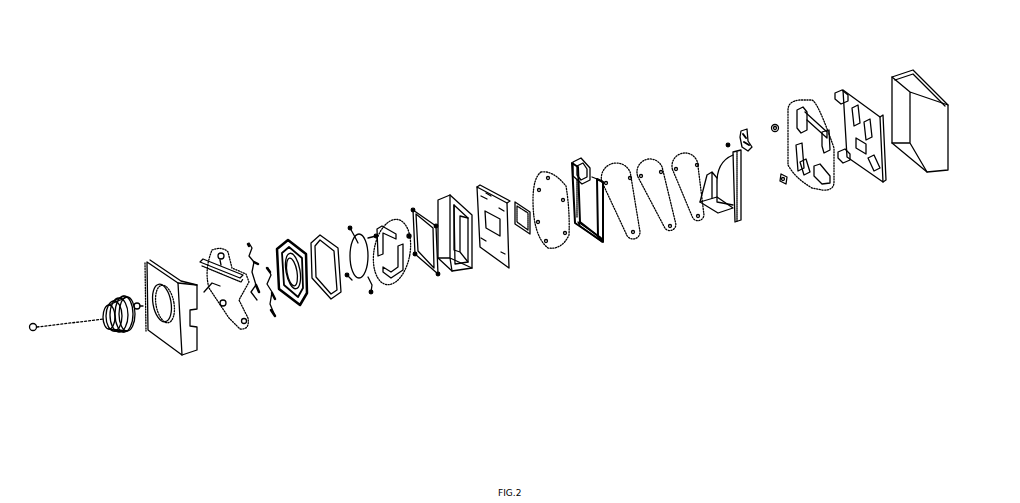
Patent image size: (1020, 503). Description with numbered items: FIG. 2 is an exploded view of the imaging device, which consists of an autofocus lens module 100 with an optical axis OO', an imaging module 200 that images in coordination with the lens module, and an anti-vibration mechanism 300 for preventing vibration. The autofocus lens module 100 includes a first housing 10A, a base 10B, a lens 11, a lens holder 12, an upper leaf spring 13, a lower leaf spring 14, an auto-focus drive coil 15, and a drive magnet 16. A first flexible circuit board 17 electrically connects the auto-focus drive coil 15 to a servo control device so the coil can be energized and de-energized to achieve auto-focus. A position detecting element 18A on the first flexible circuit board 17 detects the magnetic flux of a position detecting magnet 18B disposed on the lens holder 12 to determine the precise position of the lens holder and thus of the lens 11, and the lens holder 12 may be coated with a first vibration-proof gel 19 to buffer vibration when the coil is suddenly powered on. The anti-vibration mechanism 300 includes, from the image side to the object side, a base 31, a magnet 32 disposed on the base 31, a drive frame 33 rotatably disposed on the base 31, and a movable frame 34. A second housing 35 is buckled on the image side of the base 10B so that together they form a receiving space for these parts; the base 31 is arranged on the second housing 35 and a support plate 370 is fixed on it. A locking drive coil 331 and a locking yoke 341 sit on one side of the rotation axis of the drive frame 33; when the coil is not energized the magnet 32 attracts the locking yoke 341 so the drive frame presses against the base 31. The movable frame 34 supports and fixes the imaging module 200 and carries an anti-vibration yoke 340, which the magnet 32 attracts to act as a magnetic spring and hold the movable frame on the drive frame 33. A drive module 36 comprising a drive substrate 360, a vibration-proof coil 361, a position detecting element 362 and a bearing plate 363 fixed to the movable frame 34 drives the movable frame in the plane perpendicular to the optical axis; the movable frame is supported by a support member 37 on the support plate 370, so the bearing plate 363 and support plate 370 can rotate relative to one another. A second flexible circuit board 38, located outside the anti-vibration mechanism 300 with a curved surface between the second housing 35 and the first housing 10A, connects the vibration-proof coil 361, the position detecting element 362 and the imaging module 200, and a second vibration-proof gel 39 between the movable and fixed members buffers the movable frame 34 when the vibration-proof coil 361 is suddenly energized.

The autofocus lens module 100 is at (67, 227).
The anti-vibration mechanism 300 is at (885, 27).
The lens 11 is at (120, 296).
The first housing 10A is at (151, 261).
The first flexible circuit board 17 is at (205, 262).
The first vibration-proof gel 19 is at (221, 252).
The position detecting element 18A is at (214, 296).
The upper leaf spring 13 is at (250, 240).
The lens holder 12 is at (289, 240).
The auto-focus drive coil 15 is at (320, 236).
The lower leaf spring 14 is at (350, 226).
The drive magnet 16 is at (386, 222).
The position detecting magnet 18B is at (408, 233).
The base 10B is at (448, 198).
The movable frame 34 is at (478, 188).
The imaging module 200 is at (529, 258).
The anti-vibration yoke 340 is at (548, 176).
The drive module 36 is at (620, 223).
The drive substrate 360 is at (590, 243).
The vibration-proof coil 361 is at (600, 242).
The position detecting element 362 is at (578, 163).
The bearing plate 363 is at (612, 170).
The support member 37 is at (666, 234).
The support plate 370 is at (674, 164).
The second flexible circuit board 38 is at (725, 220).
The locking yoke 341 is at (727, 142).
The drive frame 33 is at (742, 130).
The locking drive coil 331 is at (774, 124).
The second vibration-proof gel 39 is at (784, 187).
The magnet 32 is at (806, 102).
The base 31 is at (850, 90).
The second housing 35 is at (900, 80).